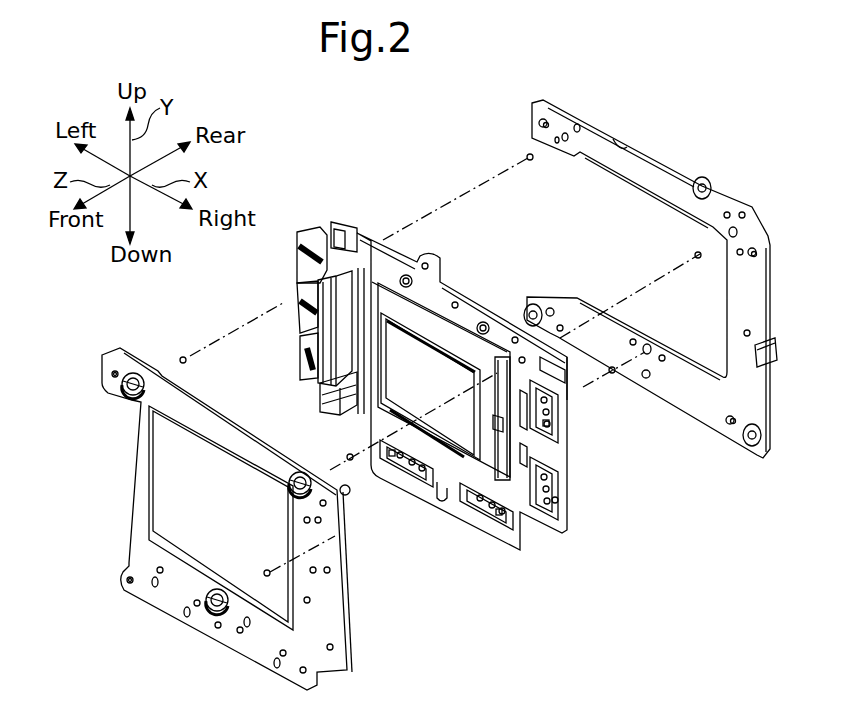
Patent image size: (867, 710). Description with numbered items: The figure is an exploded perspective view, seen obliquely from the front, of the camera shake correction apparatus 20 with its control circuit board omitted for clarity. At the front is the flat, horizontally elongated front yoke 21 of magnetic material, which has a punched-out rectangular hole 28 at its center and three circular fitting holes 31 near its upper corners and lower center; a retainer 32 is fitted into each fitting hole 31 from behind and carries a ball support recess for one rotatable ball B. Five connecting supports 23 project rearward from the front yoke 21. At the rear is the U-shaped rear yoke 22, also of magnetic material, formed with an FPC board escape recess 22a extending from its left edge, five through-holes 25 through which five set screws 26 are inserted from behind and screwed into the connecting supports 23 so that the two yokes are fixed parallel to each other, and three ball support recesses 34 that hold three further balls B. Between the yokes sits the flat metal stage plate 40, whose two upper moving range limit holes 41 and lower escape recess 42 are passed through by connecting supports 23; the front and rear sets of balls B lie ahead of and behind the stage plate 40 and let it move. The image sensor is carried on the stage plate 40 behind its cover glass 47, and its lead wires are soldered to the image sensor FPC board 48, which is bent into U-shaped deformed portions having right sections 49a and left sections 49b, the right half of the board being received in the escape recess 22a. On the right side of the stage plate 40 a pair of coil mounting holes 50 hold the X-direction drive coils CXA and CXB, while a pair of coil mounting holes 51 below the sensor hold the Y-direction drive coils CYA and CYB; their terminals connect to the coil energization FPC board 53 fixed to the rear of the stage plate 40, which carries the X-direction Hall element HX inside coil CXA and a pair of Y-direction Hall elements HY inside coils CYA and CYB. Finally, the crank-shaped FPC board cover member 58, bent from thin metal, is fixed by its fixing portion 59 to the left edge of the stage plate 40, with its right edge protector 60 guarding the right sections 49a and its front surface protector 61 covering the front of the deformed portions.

The camera shake correction apparatus 20 is at (438, 143).
The front yoke 21 is at (137, 485).
The rear yoke 22 is at (727, 193).
The FPC board escape recess 22a is at (612, 170).
The connecting support 23 is at (350, 490).
The through-hole 25 is at (543, 118).
The set screw 26 is at (540, 124).
The rectangular hole 28 is at (154, 455).
The fitting hole 31 is at (136, 375).
The retainer 32 is at (126, 393).
The ball support recess 34 is at (578, 124).
The stage plate 40 is at (372, 245).
The moving range limit hole 41 is at (346, 224).
The escape recess 42 is at (452, 500).
The cover glass 47 is at (410, 350).
The image sensor FPC board 48 is at (298, 285).
The right section 49a is at (338, 270).
The left section 49b is at (306, 252).
The coil mounting hole 50 is at (548, 412).
The coil mounting hole 51 is at (412, 472).
The coil energization FPC board 53 is at (300, 365).
The FPC board cover member 58 is at (309, 402).
The fixing portion 59 is at (368, 279).
The right edge protector 60 is at (340, 325).
The front surface protector 61 is at (333, 380).
The ball B is at (530, 160).
The X-direction Hall element HX is at (550, 445).
The Y-direction Hall element HY is at (393, 453).
The X-direction drive coil CXA is at (552, 430).
The X-direction drive coil CXB is at (558, 533).
The Y-direction drive coil CYA is at (410, 478).
The Y-direction drive coil CYB is at (500, 532).